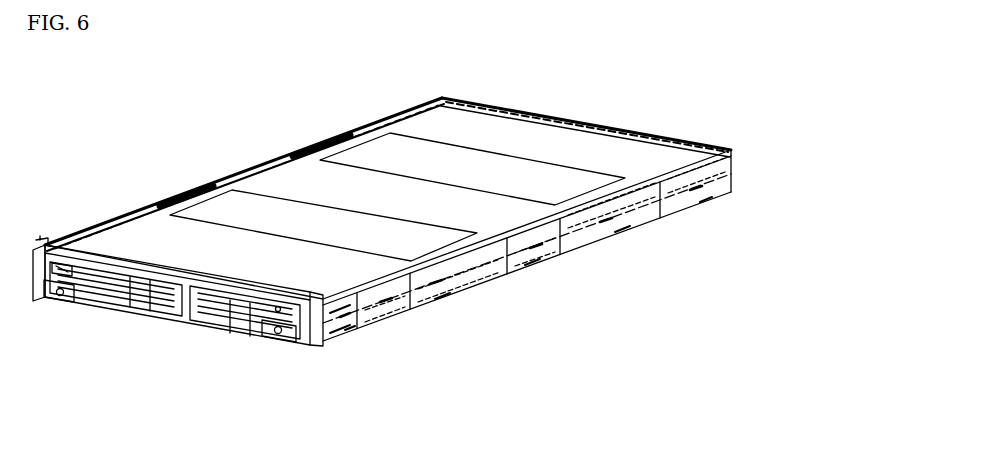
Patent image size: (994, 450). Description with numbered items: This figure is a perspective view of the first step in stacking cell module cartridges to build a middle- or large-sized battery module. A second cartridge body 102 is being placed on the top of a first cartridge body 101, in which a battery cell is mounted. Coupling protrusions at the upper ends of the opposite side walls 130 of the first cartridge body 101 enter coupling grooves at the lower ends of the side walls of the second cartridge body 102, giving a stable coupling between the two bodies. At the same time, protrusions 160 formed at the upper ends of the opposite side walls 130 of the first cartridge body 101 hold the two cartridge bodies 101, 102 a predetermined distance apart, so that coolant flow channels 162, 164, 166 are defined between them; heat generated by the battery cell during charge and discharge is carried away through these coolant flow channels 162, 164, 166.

The first cartridge body 101 is at (735, 152).
The second cartridge body 102 is at (733, 178).
The opposite side walls 130 is at (330, 327).
The protrusions 160 is at (473, 267).
The coolant flow channel 162 is at (413, 303).
The coolant flow channel 164 is at (570, 233).
The coolant flow channel 166 is at (697, 192).